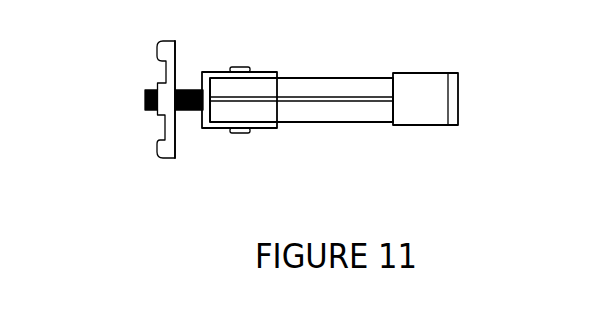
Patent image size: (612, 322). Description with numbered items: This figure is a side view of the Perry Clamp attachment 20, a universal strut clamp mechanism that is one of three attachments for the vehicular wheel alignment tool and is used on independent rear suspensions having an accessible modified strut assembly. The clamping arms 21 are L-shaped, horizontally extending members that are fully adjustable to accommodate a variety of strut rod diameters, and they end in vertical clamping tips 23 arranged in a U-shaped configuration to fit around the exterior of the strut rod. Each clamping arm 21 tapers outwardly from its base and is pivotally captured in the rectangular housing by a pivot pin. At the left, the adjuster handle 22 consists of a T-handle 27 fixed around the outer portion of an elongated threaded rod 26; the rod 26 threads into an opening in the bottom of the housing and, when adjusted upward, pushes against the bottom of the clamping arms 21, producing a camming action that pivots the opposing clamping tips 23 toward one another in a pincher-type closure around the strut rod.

The Perry Clamp attachment 20 is at (145, 67).
The clamping arms 21 is at (327, 77).
The adjuster handle 22 is at (150, 130).
The clamping tips 23 is at (458, 125).
The elongated threaded rod 26 is at (187, 90).
The T-handle 27 is at (175, 158).